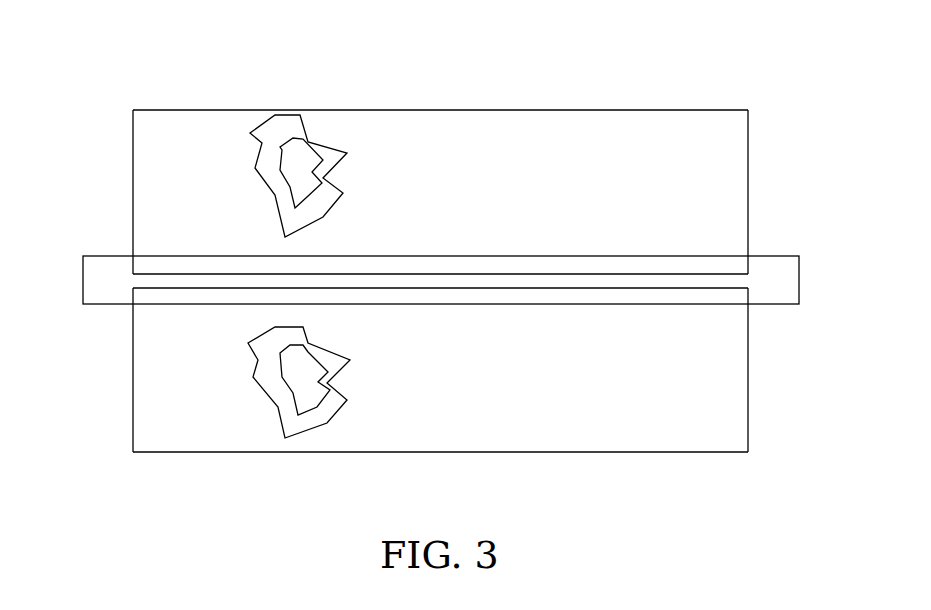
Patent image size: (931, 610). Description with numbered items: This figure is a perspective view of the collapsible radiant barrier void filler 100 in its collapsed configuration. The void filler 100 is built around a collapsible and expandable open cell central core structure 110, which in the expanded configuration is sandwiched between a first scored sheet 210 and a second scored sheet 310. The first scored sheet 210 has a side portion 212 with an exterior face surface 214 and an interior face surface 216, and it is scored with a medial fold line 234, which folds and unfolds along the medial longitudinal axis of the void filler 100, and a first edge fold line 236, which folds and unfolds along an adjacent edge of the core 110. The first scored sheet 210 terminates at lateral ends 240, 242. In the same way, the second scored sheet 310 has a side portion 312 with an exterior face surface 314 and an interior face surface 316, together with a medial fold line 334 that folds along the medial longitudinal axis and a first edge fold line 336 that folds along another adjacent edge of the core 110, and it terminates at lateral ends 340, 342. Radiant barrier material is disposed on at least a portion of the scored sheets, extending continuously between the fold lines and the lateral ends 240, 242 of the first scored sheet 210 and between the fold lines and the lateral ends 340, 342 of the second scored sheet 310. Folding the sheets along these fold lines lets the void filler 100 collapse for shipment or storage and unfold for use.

The collapsible radiant barrier void filler 100 is at (436, 273).
The open cell central core structure 110 is at (112, 255).
The first scored sheet 210 is at (162, 100).
The side portion 212 is at (145, 165).
The exterior face surface 214 is at (187, 202).
The interior face surface 216 is at (262, 142).
The medial fold line 234 is at (607, 110).
The first edge fold line 236 is at (616, 256).
The lateral end 240 is at (133, 207).
The lateral end 242 is at (748, 182).
The second scored sheet 310 is at (147, 460).
The side portion 312 is at (155, 387).
The exterior face surface 314 is at (200, 347).
The interior face surface 316 is at (272, 375).
The medial fold line 334 is at (590, 452).
The first edge fold line 336 is at (608, 307).
The lateral end 340 is at (133, 382).
The lateral end 342 is at (748, 397).